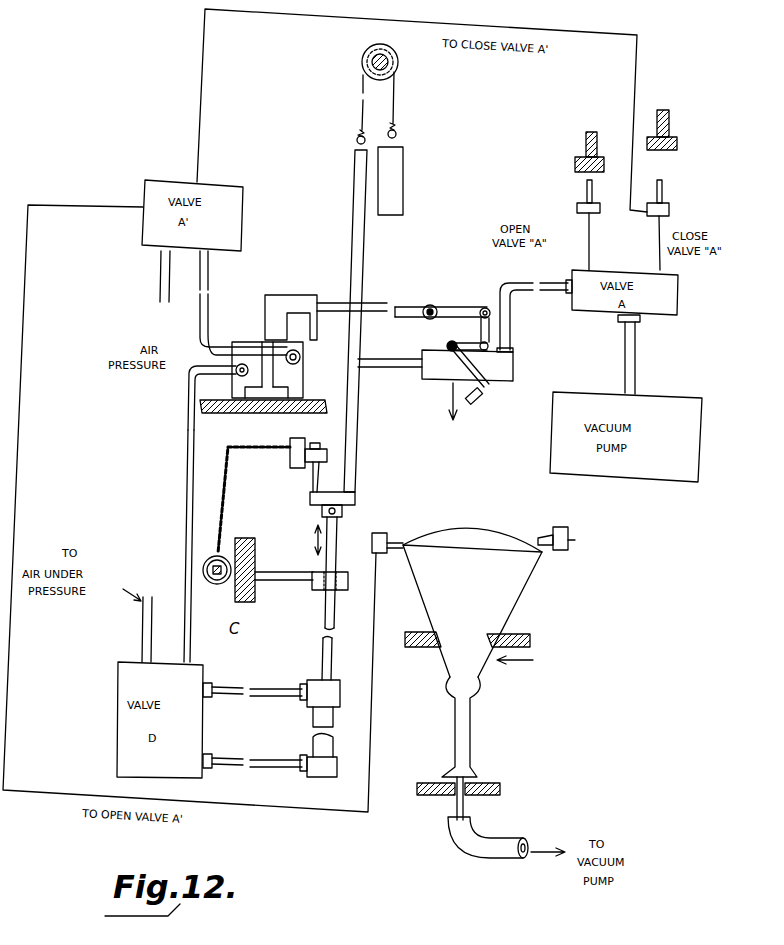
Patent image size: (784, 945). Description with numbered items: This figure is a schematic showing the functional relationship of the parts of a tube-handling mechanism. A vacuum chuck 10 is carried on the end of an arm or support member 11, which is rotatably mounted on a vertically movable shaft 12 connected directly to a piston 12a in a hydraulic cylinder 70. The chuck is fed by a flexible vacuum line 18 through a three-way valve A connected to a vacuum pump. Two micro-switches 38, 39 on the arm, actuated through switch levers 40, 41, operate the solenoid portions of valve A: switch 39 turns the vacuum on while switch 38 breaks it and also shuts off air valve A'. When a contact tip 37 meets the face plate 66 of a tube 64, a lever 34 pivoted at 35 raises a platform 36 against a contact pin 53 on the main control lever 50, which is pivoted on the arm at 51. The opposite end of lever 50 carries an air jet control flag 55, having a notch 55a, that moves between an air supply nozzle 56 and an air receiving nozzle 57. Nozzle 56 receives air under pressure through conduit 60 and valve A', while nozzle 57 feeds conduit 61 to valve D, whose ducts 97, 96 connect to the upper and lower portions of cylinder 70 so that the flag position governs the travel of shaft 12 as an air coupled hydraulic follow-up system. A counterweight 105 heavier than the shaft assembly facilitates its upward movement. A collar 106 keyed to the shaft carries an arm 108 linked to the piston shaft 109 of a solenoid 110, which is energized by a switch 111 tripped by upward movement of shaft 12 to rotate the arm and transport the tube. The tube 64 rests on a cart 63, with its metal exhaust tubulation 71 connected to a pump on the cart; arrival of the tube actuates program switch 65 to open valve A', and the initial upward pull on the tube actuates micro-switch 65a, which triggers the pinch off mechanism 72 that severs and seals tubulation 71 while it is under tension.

The vacuum chuck 10 is at (414, 372).
The arm or support member 11 is at (386, 357).
The shaft 12 is at (354, 466).
The piston 12a is at (336, 560).
The vacuum line 18 is at (522, 290).
The lever 34 is at (468, 363).
The pivot 35 is at (448, 343).
The platform 36 is at (462, 344).
The contact tip 37 is at (476, 413).
The micro-switch 38 is at (669, 211).
The micro-switch 39 is at (577, 208).
The switch lever 40 is at (672, 134).
The switch lever 41 is at (582, 146).
The main control lever 50 is at (462, 300).
The pivot 51 is at (431, 304).
The contact pin 53 is at (489, 306).
The air jet control flag 55 is at (318, 318).
The notch 55a is at (298, 328).
The air supply nozzle 56 is at (297, 381).
The air receiving nozzle 57 is at (233, 381).
The conduit 60 is at (203, 331).
The conduit 61 is at (186, 382).
The cart 63 is at (530, 640).
The tube 64 is at (500, 605).
The program switch 65 is at (381, 528).
The micro-switch 65a is at (575, 541).
The face plate 66 is at (472, 530).
The hydraulic cylinder 70 is at (330, 714).
The exhaust tubulation 71 is at (460, 808).
The pinch off mechanism 72 is at (496, 785).
The duct 96 is at (268, 760).
The duct 97 is at (264, 690).
The counterweight 105 is at (397, 190).
The collar 106 is at (316, 589).
The arm 108 is at (273, 568).
The piston shaft 109 is at (221, 548).
The solenoid 110 is at (208, 586).
The switch 111 is at (290, 459).